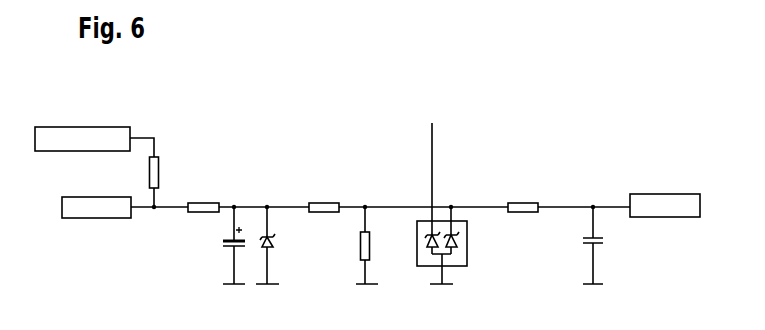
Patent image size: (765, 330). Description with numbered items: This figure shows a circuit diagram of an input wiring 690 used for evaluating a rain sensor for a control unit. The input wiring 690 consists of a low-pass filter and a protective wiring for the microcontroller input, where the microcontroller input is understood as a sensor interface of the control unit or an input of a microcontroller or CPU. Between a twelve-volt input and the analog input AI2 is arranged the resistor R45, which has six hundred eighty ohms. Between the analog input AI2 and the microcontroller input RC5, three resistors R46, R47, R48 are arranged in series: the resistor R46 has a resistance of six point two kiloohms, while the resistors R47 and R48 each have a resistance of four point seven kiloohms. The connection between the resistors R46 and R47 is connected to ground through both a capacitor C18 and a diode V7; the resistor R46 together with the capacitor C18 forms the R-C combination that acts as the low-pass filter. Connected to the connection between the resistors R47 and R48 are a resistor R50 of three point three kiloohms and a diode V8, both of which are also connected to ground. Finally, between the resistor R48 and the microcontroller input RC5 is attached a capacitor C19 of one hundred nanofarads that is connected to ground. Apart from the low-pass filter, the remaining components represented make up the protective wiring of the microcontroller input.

The input wiring 690 is at (578, 115).
The resistor R45 is at (169, 174).
The resistor R46 is at (208, 190).
The resistor R47 is at (323, 190).
The resistor R48 is at (523, 190).
The resistor R50 is at (378, 245).
The capacitor C18 is at (180, 245).
The capacitor C19 is at (612, 245).
The diode V7 is at (304, 245).
The diode V8 is at (496, 252).